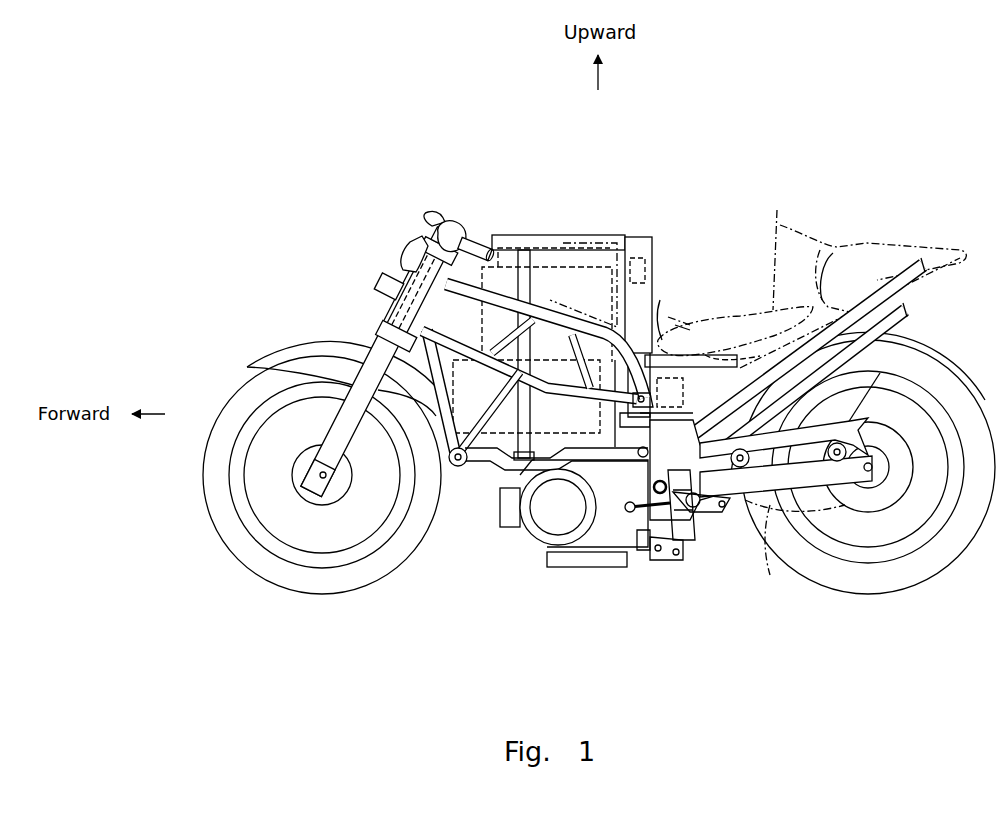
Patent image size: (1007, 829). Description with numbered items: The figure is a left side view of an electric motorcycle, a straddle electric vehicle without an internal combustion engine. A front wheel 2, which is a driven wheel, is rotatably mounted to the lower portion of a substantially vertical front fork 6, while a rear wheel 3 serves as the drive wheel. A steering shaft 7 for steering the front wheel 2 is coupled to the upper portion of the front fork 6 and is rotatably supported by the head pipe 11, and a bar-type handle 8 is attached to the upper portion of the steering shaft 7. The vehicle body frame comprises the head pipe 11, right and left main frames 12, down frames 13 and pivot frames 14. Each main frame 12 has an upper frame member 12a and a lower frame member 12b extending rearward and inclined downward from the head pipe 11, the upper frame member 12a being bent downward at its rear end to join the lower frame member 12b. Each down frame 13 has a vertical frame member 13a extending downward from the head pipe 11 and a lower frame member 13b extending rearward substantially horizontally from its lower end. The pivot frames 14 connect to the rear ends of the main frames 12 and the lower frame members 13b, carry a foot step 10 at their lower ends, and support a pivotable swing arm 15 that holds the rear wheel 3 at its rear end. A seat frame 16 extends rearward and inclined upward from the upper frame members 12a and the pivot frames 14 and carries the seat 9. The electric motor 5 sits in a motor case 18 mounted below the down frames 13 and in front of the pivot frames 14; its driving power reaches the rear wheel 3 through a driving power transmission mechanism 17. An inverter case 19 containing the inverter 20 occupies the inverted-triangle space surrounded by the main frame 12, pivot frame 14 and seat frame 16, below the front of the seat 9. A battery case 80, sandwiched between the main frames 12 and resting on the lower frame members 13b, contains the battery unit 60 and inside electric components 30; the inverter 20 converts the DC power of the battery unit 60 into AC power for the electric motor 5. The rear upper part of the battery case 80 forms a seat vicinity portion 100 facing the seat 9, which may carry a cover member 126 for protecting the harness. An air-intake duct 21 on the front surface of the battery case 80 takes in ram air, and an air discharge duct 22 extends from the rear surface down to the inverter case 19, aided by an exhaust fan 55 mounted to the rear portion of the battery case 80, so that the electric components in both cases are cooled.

The front wheel 2 is at (257, 558).
The rear wheel 3 is at (935, 558).
The electric motor 5 is at (545, 522).
The front fork 6 is at (372, 362).
The steering shaft 7 is at (420, 240).
The handle 8 is at (465, 236).
The seat 9 is at (782, 224).
The foot step 10 is at (703, 540).
The head pipe 11 is at (410, 272).
The main frame 12 is at (539, 297).
The upper frame member 12a is at (502, 318).
The lower frame member 12b is at (550, 335).
The down frame 13 is at (660, 463).
The vertical frame member 13a is at (452, 468).
The lower frame member 13b is at (500, 462).
The pivot frame 14 is at (641, 528).
The swing arm 15 is at (752, 498).
The seat frame 16 is at (872, 302).
The driving power transmission mechanism 17 is at (800, 520).
The motor case 18 is at (606, 538).
The inverter case 19 is at (735, 355).
The inverter 20 is at (705, 355).
The air-intake duct 21 is at (385, 286).
The air discharge duct 22 is at (675, 325).
The inside electric components 30 is at (600, 245).
The exhaust fan 55 is at (645, 265).
The battery unit 60 is at (615, 250).
The battery case 80 is at (660, 300).
The seat vicinity portion 100 is at (625, 238).
The cover member 126 is at (668, 317).